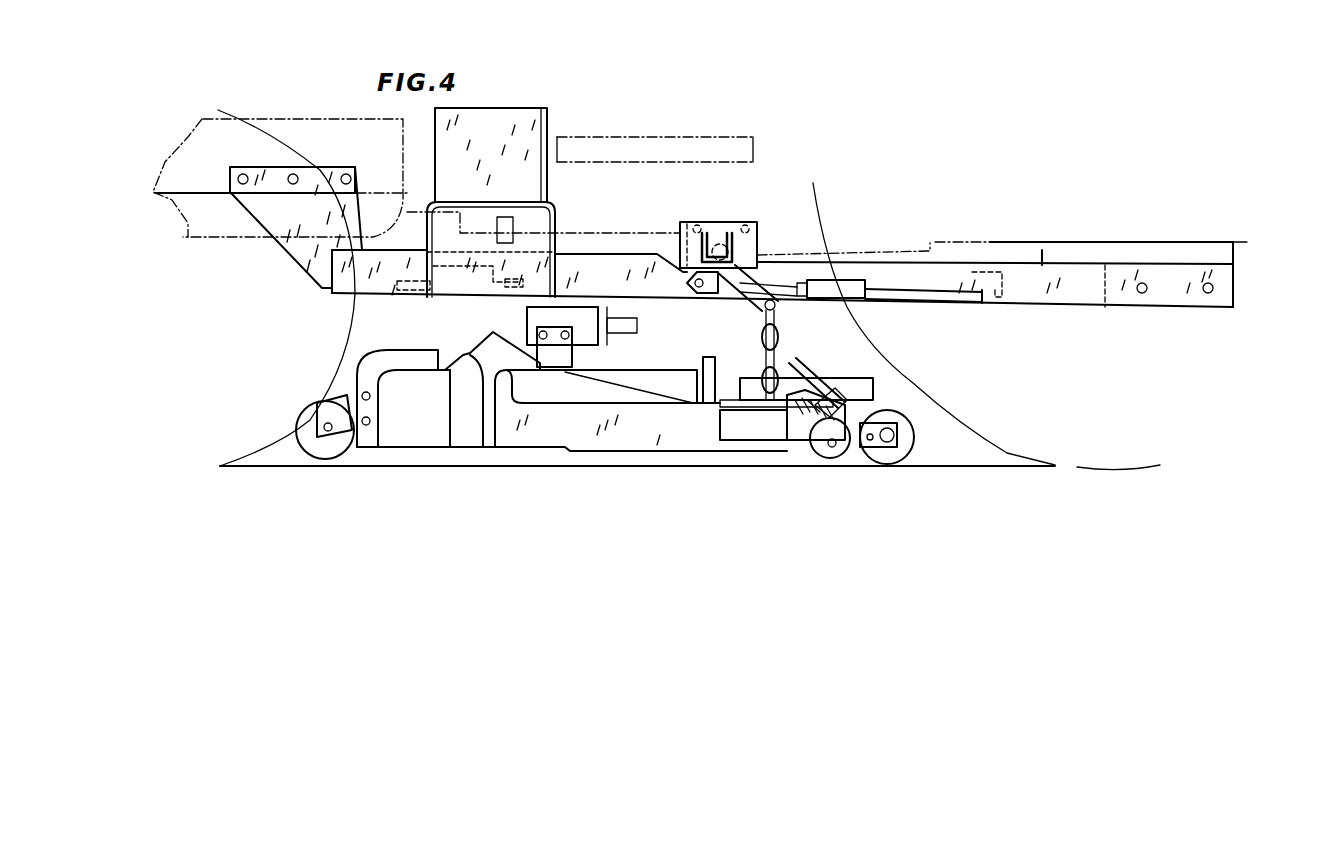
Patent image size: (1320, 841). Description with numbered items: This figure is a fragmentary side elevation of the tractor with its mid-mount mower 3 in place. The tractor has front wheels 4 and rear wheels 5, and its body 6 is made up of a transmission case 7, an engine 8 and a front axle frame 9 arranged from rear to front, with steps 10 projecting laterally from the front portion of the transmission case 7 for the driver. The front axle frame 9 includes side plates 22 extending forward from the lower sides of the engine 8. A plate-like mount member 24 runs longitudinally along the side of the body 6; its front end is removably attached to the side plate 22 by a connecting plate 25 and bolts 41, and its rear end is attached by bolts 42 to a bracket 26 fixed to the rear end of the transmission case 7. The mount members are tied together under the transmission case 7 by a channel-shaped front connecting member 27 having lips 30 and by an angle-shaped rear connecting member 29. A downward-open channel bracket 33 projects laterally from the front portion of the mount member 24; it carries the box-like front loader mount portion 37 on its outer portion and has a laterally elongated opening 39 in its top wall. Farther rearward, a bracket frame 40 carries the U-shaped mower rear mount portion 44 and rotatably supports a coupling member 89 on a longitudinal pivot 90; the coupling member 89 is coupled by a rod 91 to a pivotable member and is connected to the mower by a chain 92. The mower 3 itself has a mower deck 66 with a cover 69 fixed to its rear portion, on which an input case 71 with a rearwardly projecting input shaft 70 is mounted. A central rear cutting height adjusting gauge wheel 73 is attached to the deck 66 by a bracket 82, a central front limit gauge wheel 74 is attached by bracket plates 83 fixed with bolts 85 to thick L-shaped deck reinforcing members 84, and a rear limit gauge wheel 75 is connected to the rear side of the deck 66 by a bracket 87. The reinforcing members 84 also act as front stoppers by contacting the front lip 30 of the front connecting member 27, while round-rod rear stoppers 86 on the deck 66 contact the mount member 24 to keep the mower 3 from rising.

The mower 3 is at (607, 450).
The front wheels 4 is at (281, 440).
The rear wheels 5 is at (962, 432).
The body 6 is at (1040, 247).
The transmission case 7 is at (948, 252).
The engine 8 is at (236, 243).
The front axle frame 9 is at (170, 196).
The steps 10 is at (716, 136).
The side plates 22 is at (207, 183).
The mount members 24 is at (673, 290).
The connecting plate 25 is at (305, 267).
The bracket 26 is at (1235, 258).
The front connecting member 27 is at (475, 270).
The rear connecting member 29 is at (1003, 275).
The lips 30 is at (401, 292).
The projecting brackets 33 is at (557, 209).
The front loader mount portion 37 is at (549, 120).
The opening 39 is at (503, 216).
The bracket frame 40 is at (748, 247).
The bolts 41 is at (243, 174).
The bolts 42 is at (1140, 294).
The mower rear mount portion 44 is at (722, 236).
The mower deck 66 is at (543, 433).
The cover 69 is at (667, 382).
The input shaft 70 is at (622, 320).
The input case 71 is at (572, 317).
The rear cutting height adjusting gauge wheel 73 is at (882, 455).
The front limit gauge wheel 74 is at (338, 448).
The rear limit gauge wheels 75 is at (822, 455).
The bracket 82 is at (877, 413).
The bracket plates 83 is at (340, 407).
The deck reinforcing members 84 is at (397, 367).
The bolts 85 is at (370, 398).
The rear stoppers 86 is at (716, 365).
The bracket 87 is at (810, 433).
The coupling member 89 is at (742, 268).
The pivot 90 is at (717, 246).
The rod 91 is at (898, 292).
The chain 92 is at (782, 333).